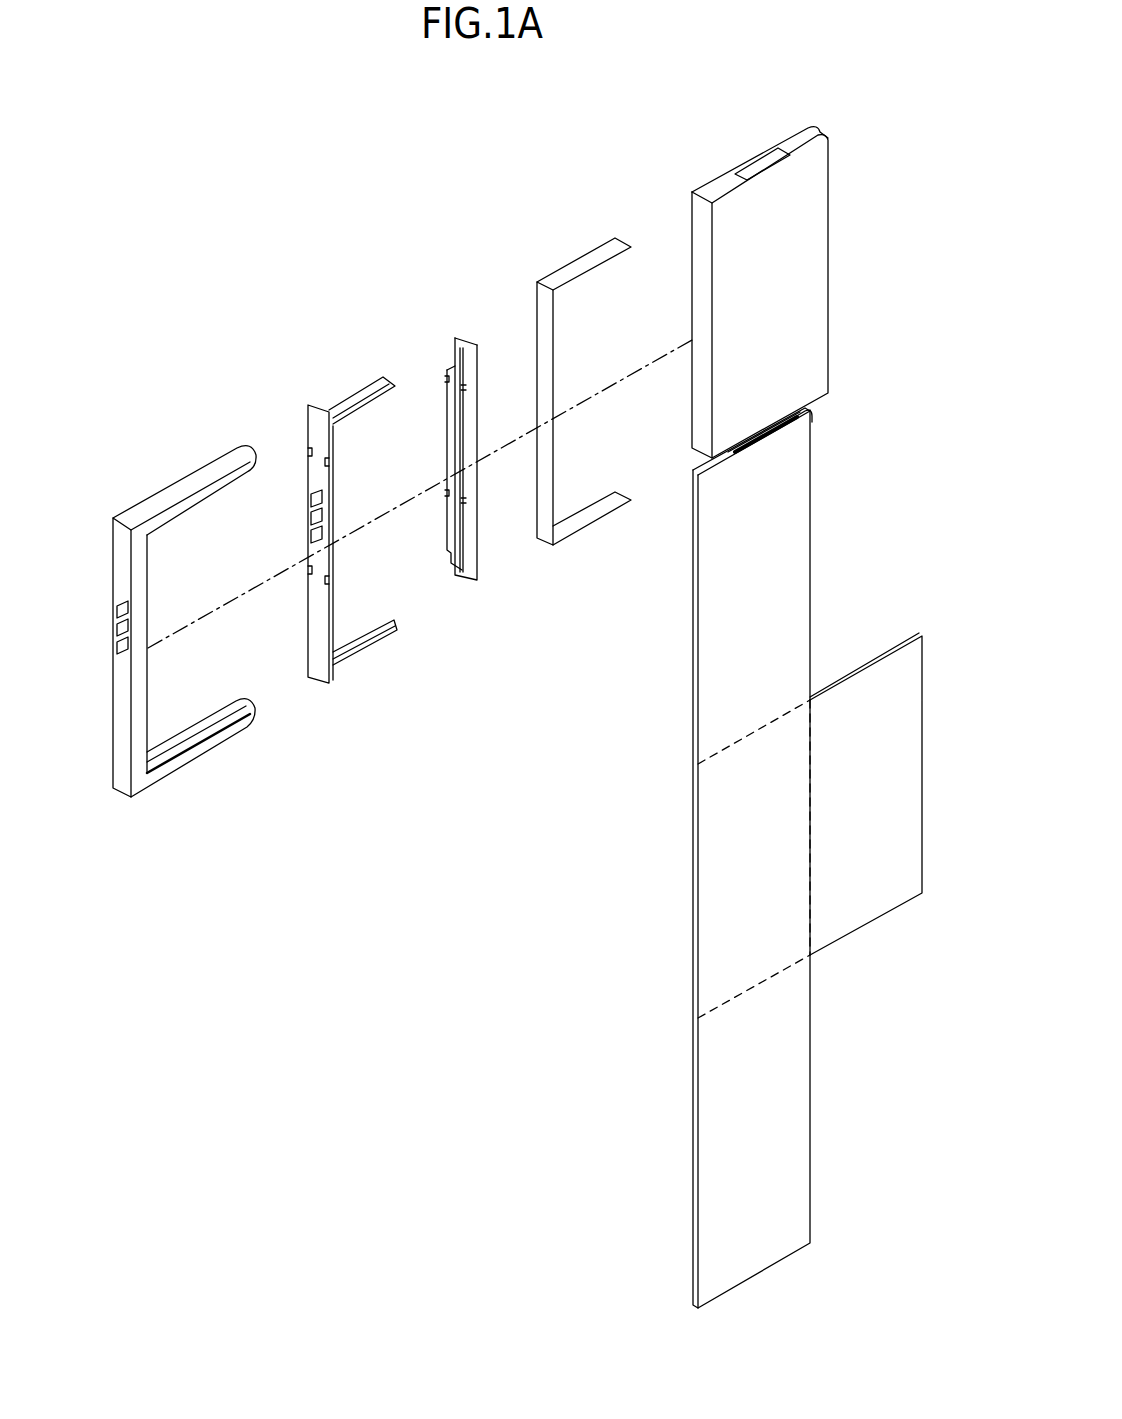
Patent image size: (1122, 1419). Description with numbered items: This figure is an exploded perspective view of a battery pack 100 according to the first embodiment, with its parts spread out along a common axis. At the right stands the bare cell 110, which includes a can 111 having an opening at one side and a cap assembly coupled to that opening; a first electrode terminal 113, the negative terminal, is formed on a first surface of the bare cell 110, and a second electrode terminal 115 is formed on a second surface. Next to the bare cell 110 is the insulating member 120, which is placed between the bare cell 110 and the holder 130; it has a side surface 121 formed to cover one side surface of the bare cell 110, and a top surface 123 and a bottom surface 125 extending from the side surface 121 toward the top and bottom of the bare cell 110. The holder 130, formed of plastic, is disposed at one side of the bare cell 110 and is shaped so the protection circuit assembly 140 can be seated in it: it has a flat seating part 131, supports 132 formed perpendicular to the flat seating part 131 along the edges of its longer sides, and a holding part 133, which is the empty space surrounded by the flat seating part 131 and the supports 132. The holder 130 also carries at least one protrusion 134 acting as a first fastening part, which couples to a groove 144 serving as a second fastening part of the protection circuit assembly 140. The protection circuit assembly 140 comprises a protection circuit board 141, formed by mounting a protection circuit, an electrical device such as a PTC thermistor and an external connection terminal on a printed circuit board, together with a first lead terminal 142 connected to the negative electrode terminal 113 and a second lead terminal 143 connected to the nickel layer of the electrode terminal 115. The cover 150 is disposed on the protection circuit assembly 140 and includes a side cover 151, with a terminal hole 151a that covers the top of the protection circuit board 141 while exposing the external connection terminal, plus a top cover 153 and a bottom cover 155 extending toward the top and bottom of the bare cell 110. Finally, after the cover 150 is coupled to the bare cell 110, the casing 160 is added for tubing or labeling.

The battery pack 100 is at (452, 182).
The bare cell 110 is at (785, 130).
The can 111 is at (822, 258).
The first electrode terminal 113 is at (750, 168).
The second electrode terminal 115 is at (806, 420).
The insulating member 120 is at (576, 246).
The side surface 121 is at (553, 340).
The top surface 123 is at (598, 260).
The bottom surface 125 is at (582, 520).
The holder 130 is at (461, 334).
The flat seating part 131 is at (468, 346).
The supports 132 is at (478, 408).
The holding part 133 is at (455, 432).
The protrusion 134 is at (462, 504).
The protection circuit assembly 140 is at (383, 354).
The protection circuit board 141 is at (312, 604).
The first lead terminal 142 is at (359, 394).
The second lead terminal 143 is at (370, 632).
The groove 144 is at (312, 455).
The cover 150 is at (218, 412).
The side cover 151 is at (117, 740).
The terminal hole 151a is at (118, 646).
The top cover 153 is at (202, 468).
The bottom cover 155 is at (203, 762).
The casing 160 is at (713, 866).